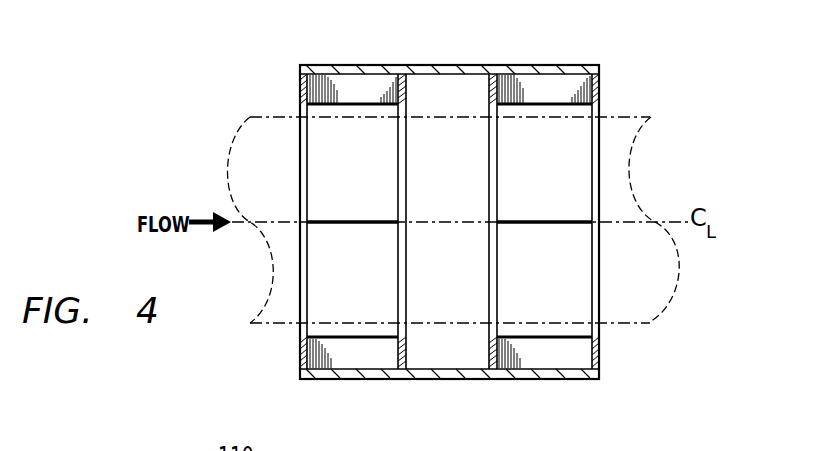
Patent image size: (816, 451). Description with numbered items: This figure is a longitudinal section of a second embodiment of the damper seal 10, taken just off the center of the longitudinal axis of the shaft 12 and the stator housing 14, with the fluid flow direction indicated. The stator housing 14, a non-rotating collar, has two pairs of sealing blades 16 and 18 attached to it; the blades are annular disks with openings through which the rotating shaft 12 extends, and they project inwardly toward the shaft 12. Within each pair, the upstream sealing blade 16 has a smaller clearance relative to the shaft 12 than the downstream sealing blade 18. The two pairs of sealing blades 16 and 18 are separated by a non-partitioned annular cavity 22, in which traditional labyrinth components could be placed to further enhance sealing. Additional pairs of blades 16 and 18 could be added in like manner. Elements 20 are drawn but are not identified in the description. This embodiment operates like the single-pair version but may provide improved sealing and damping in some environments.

The damper seal 10 is at (322, 52).
The shaft 12 is at (268, 114).
The stator housing 14 is at (553, 65).
The upstream sealing blade 16 is at (302, 90).
The downstream sealing blade 18 is at (407, 97).
The plates 20 is at (358, 98).
The annular cavity 22 is at (476, 74).